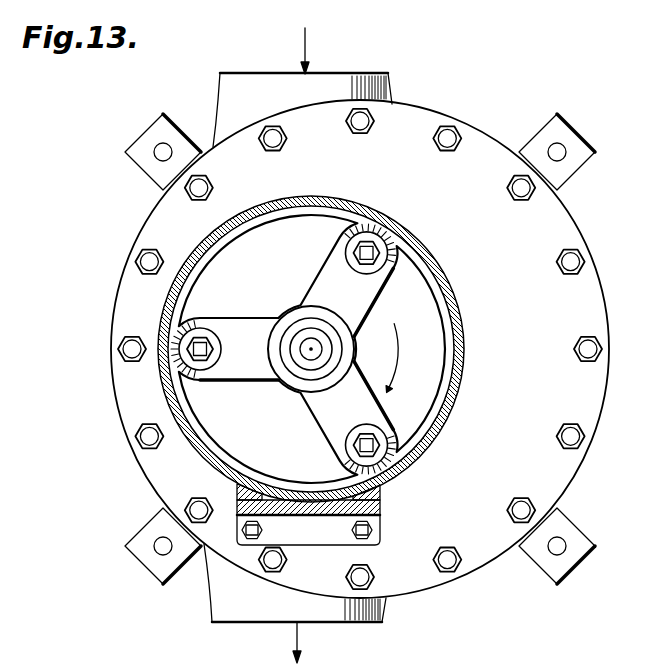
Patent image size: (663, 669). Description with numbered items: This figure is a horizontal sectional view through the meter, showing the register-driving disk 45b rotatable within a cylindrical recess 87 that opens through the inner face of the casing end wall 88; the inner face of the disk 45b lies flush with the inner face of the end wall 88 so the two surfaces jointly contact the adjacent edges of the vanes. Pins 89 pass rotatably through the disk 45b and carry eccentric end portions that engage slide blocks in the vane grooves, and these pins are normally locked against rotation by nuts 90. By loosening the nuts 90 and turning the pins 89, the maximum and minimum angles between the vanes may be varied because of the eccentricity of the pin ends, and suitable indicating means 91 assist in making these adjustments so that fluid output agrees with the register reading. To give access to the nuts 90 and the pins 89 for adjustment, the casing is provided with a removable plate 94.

The casing end wall 88 is at (360, 345).
The cylindrical recess 87 is at (460, 380).
The register-driving disk 45b is at (447, 316).
The pins 89 is at (204, 340).
The nuts 90 is at (392, 257).
The indicating means 91 is at (362, 224).
The removable plate 94 is at (343, 536).